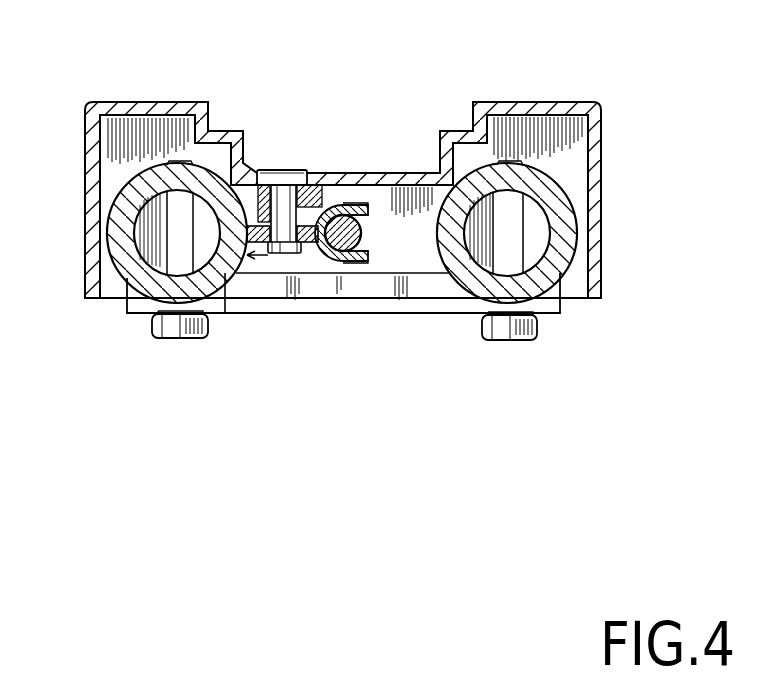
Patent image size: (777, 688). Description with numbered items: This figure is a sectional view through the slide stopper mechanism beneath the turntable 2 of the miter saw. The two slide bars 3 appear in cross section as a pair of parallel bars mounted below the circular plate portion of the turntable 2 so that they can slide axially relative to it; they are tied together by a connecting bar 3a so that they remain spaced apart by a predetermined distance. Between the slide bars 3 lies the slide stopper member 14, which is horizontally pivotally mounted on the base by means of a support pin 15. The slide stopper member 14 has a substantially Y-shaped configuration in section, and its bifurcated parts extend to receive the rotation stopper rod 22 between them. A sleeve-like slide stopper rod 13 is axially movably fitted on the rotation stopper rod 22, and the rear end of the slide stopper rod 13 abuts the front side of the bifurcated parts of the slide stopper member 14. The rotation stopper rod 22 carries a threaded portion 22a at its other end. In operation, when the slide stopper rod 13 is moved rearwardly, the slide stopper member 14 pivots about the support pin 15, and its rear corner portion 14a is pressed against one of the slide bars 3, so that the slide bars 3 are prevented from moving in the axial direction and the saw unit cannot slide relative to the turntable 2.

The turntable 2 is at (513, 102).
The slide bars 3 is at (133, 180).
The connecting bar 3a is at (290, 300).
The slide stopper rod 13 is at (364, 247).
The slide stopper member 14 is at (324, 256).
The rear corner portion 14a is at (225, 300).
The support pin 15 is at (285, 192).
The rotation stopper rod 22 is at (353, 164).
The threaded portion 22a is at (341, 213).